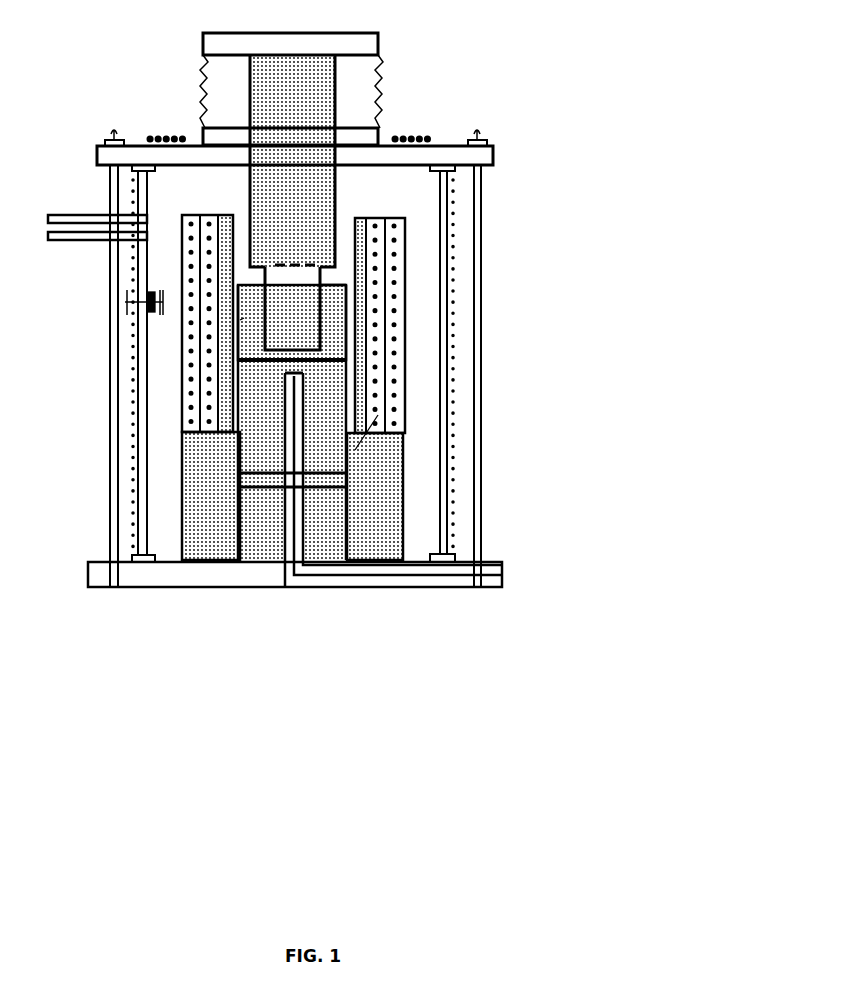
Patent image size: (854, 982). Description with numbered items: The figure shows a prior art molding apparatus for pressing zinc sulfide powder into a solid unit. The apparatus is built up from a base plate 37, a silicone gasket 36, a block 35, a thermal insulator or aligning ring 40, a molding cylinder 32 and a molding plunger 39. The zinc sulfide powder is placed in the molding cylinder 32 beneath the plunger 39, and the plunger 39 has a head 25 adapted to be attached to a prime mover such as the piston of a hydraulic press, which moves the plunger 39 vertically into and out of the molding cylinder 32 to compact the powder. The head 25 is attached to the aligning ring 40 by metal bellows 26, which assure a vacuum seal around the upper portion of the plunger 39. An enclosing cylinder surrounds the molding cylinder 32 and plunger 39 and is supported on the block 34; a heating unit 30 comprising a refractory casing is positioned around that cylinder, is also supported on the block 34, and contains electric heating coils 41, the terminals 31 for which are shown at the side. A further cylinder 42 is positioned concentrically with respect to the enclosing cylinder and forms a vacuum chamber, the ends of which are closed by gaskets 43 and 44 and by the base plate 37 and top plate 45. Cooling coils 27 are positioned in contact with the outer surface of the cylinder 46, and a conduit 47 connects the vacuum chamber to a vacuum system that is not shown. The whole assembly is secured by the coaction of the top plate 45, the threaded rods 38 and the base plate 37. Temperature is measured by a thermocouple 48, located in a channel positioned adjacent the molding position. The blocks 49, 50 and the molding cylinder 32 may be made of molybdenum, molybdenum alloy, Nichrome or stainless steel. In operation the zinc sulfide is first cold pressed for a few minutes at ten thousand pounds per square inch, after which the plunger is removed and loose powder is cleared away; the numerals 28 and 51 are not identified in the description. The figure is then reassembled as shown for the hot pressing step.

The head 25 is at (335, 33).
The metal bellows 26 is at (380, 84).
The aligning ring 40 is at (350, 133).
The cooling coils 27 is at (415, 140).
The top plate 45 is at (460, 155).
The threaded rods 38 is at (487, 131).
The gasket 44 is at (455, 170).
The gas pipe 28 is at (65, 215).
The heating unit 30 is at (385, 258).
The cylinder 46 is at (366, 239).
The molding cylinder 32 is at (338, 313).
The terminals 31 is at (150, 289).
The conduit 47 is at (338, 282).
The electric heating coils 41 is at (240, 332).
The molding plunger 39 is at (240, 320).
The block 34 is at (378, 460).
The thermocouple 48 is at (312, 587).
The block 49 is at (323, 587).
The block 50 is at (182, 408).
The block 35 is at (347, 498).
The cylinder 42 is at (147, 439).
The gasket 43 is at (502, 582).
The base plate 37 is at (492, 555).
The silicone gasket 36 is at (492, 555).
The support rod 51 is at (147, 478).